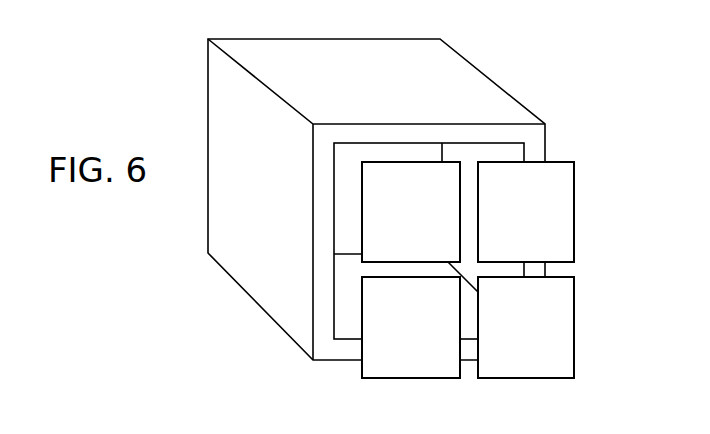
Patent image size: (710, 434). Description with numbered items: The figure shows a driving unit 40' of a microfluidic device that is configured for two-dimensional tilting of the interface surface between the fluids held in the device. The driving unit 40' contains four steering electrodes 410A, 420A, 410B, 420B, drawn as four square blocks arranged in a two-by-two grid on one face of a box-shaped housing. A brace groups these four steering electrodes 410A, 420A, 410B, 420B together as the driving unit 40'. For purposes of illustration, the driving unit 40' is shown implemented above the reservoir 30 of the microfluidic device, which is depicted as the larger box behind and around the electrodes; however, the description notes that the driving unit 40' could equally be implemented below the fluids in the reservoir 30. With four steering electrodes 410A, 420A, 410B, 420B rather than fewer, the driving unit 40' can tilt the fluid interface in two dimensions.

The reservoir 30 is at (237, 120).
The driving unit 40' is at (524, 271).
The steering electrode 410A is at (411, 212).
The steering electrode 420A is at (526, 212).
The steering electrode 410B is at (411, 327).
The steering electrode 420B is at (526, 327).